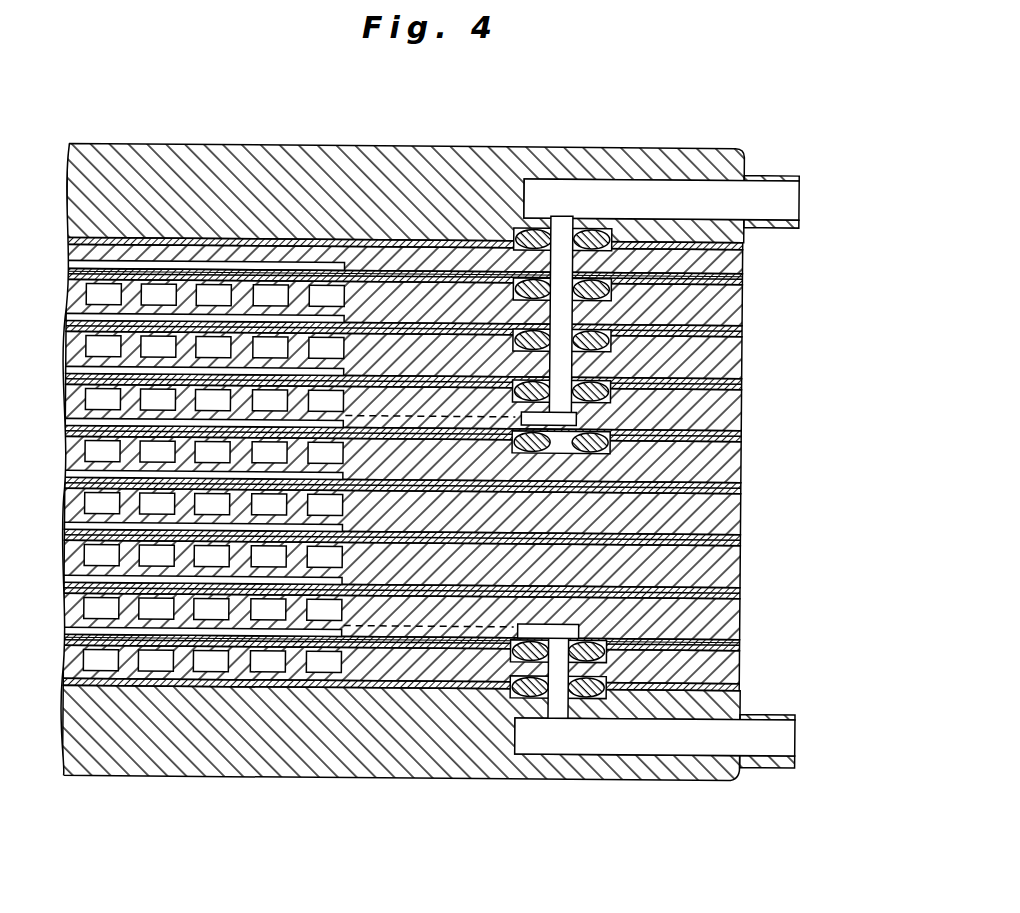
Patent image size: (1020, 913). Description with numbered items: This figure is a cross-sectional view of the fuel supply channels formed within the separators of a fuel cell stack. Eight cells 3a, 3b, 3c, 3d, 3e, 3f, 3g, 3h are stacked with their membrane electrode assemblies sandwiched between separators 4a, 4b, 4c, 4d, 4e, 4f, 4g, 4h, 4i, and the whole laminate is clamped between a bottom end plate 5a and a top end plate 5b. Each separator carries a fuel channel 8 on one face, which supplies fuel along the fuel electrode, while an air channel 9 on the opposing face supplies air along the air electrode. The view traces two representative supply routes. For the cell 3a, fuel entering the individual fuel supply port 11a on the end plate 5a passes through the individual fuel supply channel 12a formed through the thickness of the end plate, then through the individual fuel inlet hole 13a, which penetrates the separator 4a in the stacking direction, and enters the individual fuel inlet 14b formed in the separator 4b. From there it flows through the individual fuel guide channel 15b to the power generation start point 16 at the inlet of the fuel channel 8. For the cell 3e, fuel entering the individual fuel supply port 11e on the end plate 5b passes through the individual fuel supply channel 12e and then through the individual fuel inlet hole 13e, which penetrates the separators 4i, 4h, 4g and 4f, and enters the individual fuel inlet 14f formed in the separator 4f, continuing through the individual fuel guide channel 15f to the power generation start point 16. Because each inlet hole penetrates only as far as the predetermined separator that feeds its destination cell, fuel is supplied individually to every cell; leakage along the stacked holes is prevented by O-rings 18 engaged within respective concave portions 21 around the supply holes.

The cell 3a is at (754, 645).
The cell 3b is at (754, 592).
The cell 3c is at (754, 538).
The cell 3d is at (754, 486).
The cell 3e is at (754, 434).
The cell 3f is at (754, 382).
The cell 3g is at (754, 330).
The cell 3h is at (754, 278).
The separator 4a is at (744, 684).
The separator 4b is at (744, 620).
The separator 4c is at (744, 568).
The separator 4d is at (744, 514).
The separator 4e is at (744, 460).
The separator 4f is at (744, 409).
The separator 4g is at (744, 357).
The separator 4h is at (744, 307).
The separator 4i is at (744, 252).
The end plate 5a is at (380, 776).
The end plate 5b is at (276, 162).
The fuel channel 8 is at (290, 270).
The air channel 9 is at (212, 290).
The individual fuel supply port 11a is at (776, 768).
The individual fuel supply port 11e is at (773, 176).
The individual fuel supply channel 12a is at (704, 750).
The individual fuel supply channel 12e is at (648, 190).
The individual fuel inlet hole 13a is at (575, 665).
The individual fuel inlet hole 13e is at (612, 246).
The individual fuel inlet 14b is at (555, 638).
The individual fuel inlet 14f is at (622, 405).
The individual fuel guide channel 15b is at (440, 626).
The individual fuel guide channel 15f is at (440, 416).
The power generation start point 16 is at (348, 262).
The O-ring 18 is at (506, 226).
The concave portion 21 is at (516, 290).